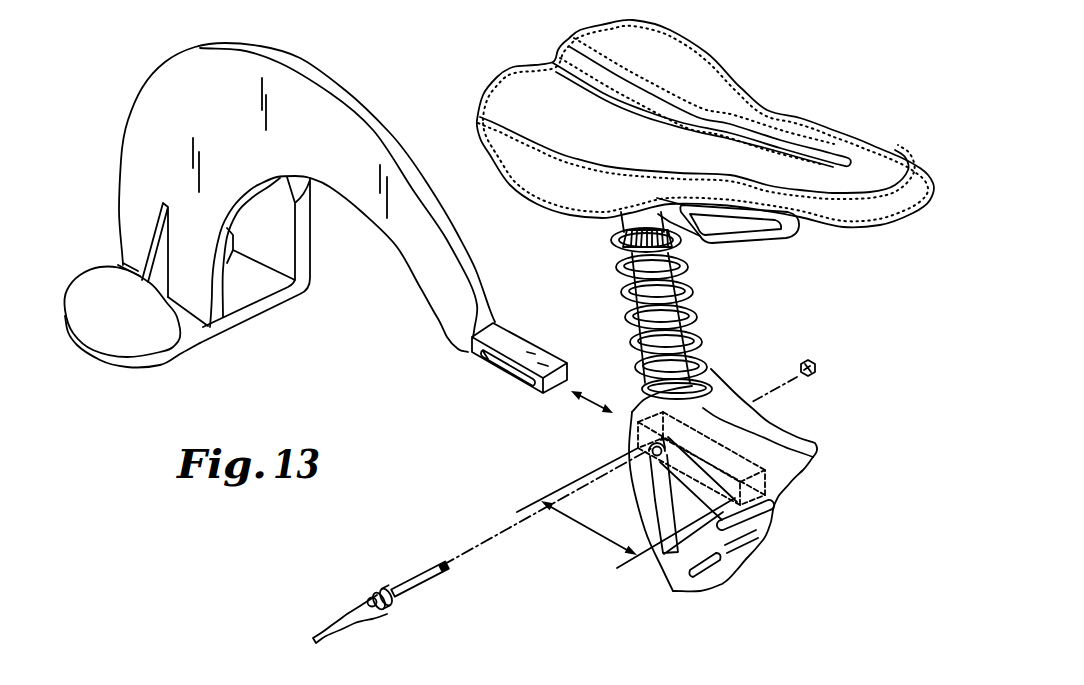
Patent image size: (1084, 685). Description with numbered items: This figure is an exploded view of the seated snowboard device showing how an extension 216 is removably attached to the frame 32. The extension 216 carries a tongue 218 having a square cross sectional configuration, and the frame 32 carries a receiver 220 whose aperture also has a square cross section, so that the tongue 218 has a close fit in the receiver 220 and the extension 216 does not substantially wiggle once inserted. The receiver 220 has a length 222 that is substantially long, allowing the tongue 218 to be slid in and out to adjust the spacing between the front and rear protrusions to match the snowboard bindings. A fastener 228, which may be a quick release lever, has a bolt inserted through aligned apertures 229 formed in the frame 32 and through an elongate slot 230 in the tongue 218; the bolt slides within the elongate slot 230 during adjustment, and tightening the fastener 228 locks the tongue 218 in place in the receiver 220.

The extension 216 is at (355, 130).
The tongue 218 is at (516, 361).
The elongate slot 230 is at (493, 357).
The frame 32 is at (638, 412).
The aligned apertures 229 is at (652, 451).
The length 222 is at (579, 526).
The receiver 220 is at (708, 500).
The fastener 228 is at (423, 587).